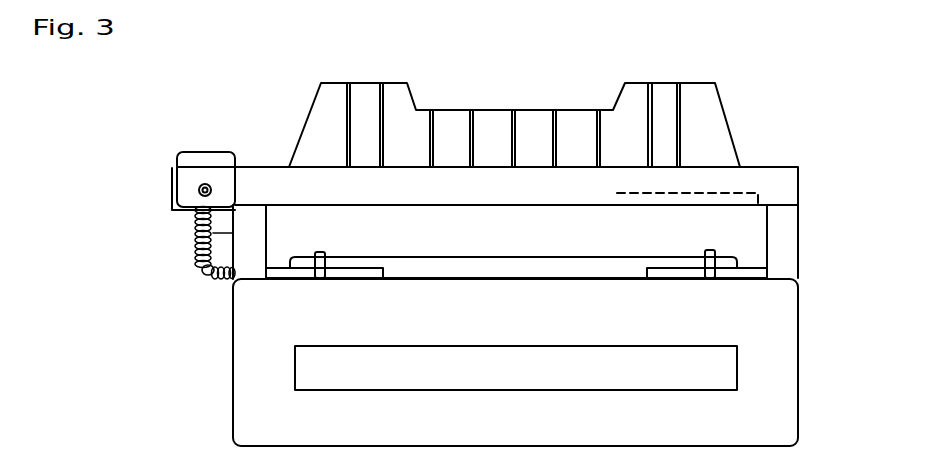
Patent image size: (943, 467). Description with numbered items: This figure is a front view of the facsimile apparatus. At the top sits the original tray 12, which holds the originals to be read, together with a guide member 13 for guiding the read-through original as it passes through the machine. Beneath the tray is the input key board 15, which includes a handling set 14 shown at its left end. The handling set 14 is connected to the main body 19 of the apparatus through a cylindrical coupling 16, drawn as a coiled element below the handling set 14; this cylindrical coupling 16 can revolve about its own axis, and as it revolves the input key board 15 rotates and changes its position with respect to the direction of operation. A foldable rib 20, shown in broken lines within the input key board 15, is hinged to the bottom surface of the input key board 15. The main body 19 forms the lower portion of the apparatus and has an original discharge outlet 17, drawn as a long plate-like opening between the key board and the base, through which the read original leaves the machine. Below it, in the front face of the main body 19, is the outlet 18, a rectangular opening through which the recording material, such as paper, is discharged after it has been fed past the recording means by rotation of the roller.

The original tray 12 is at (693, 102).
The guide member 13 is at (327, 255).
The handling set 14 is at (197, 163).
The input key board 15 is at (785, 190).
The cylindrical coupling 16 is at (195, 237).
The original discharge outlet 17 is at (437, 265).
The outlet 18 is at (392, 367).
The main body 19 is at (765, 375).
The foldable rib 20 is at (733, 193).